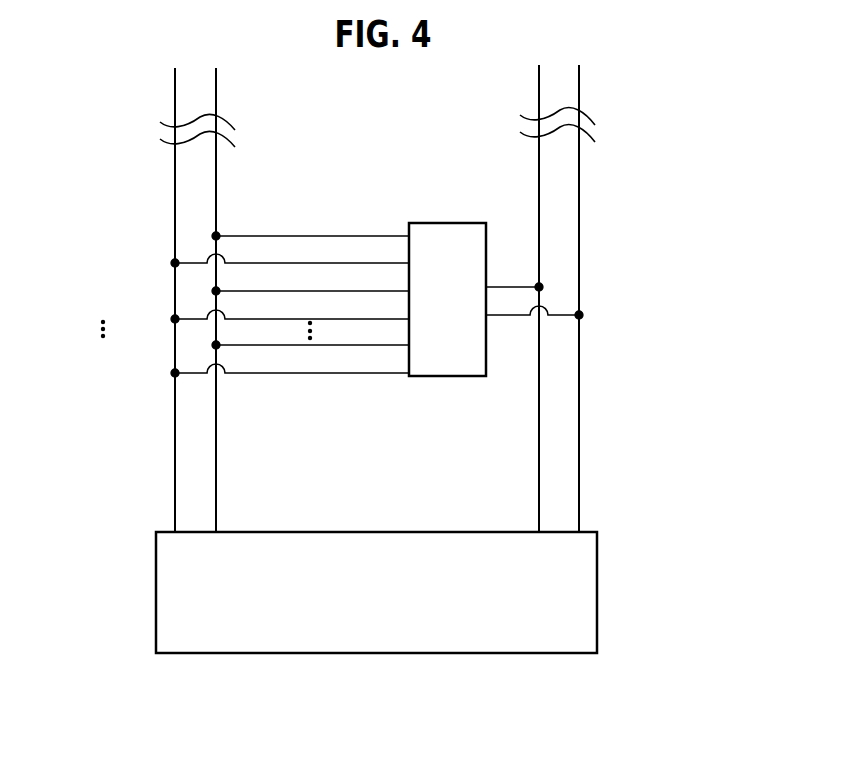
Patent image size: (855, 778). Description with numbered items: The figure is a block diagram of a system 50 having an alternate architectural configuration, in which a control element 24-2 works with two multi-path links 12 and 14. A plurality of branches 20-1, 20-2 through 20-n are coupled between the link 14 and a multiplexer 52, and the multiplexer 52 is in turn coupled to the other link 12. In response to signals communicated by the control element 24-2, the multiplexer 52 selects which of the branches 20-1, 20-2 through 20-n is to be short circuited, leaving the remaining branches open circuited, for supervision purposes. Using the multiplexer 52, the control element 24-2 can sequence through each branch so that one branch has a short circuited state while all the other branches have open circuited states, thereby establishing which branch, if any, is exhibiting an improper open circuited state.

The system 50 is at (631, 169).
The multi-path link 14 is at (146, 165).
The multi-path link 12 is at (511, 159).
The branch 20-1 is at (152, 250).
The branch 20-2 is at (152, 304).
The branch 20-n is at (152, 358).
The multiplexer 52 is at (496, 299).
The control element 24-2 is at (376, 592).